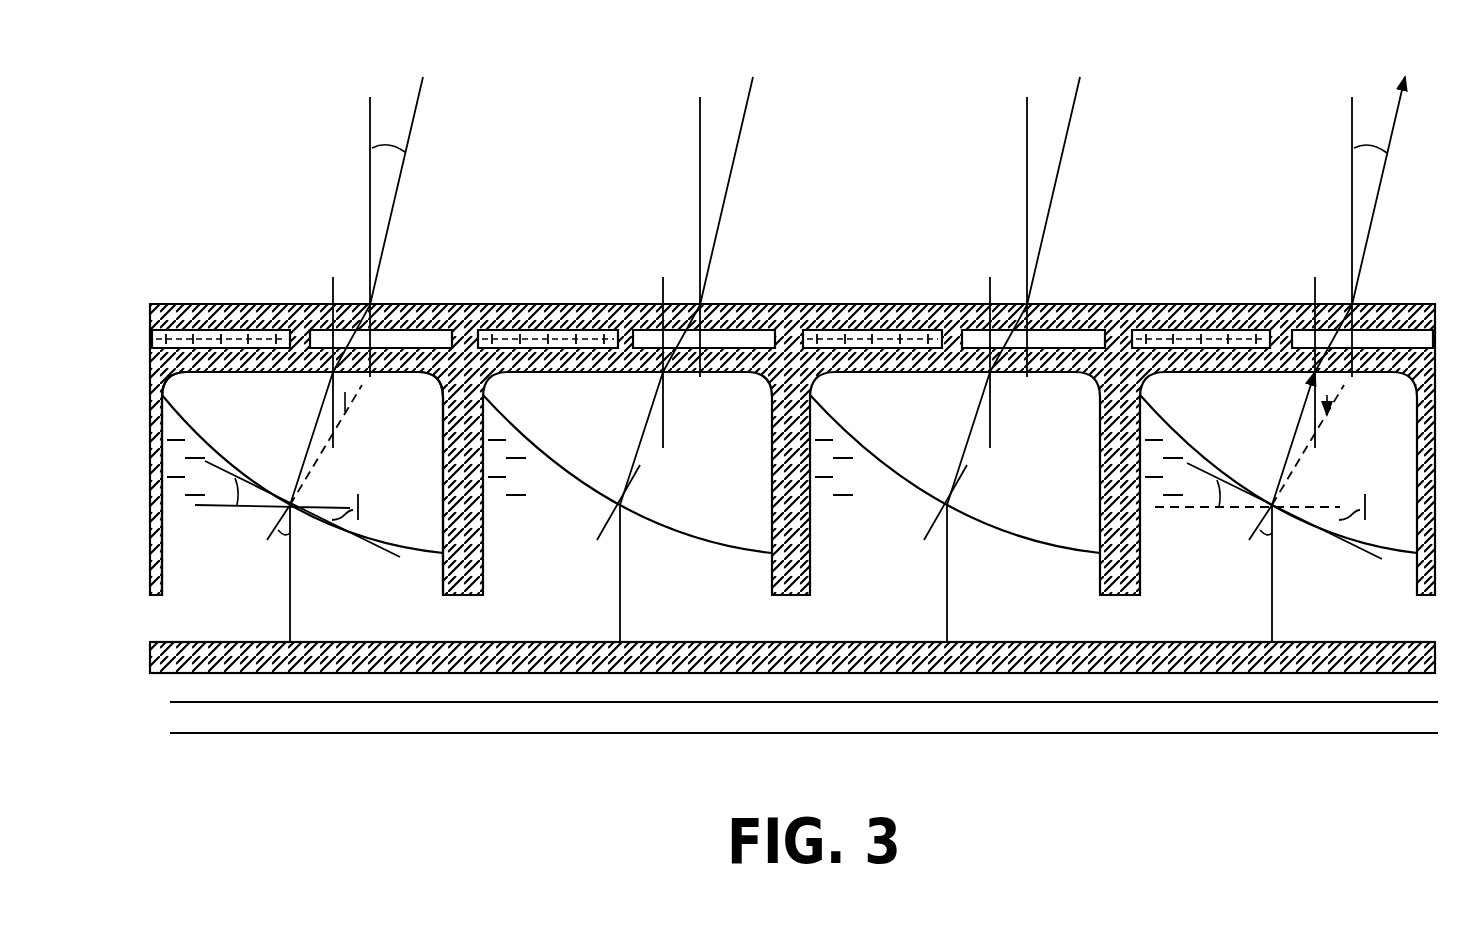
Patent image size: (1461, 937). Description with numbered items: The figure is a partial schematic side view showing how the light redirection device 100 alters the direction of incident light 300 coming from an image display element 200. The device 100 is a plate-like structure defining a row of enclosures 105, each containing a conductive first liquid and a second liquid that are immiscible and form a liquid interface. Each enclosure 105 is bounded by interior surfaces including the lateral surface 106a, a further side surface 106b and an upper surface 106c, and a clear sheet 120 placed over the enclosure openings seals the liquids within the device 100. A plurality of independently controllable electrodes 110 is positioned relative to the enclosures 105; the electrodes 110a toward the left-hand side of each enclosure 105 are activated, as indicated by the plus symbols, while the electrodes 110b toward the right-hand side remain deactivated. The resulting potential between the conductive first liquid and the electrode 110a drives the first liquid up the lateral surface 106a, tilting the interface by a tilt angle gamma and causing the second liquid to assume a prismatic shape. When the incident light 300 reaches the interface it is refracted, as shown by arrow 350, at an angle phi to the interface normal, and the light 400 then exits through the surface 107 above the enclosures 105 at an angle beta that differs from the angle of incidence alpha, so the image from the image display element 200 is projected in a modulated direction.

The light redirection device 100 is at (878, 172).
The enclosure 105 is at (463, 368).
The surface 107 is at (825, 305).
The electrodes 110 is at (310, 333).
The electrode 110a is at (200, 330).
The electrode 110b is at (325, 306).
The lateral surface 106a is at (162, 567).
The interior surface 106b is at (443, 567).
The interior surface 106c is at (385, 373).
The incident light 300 is at (290, 590).
The refracted light 350 is at (315, 452).
The transmitted light 400 is at (405, 163).
The clear sheet 120 is at (1345, 673).
The image display element 200 is at (790, 702).